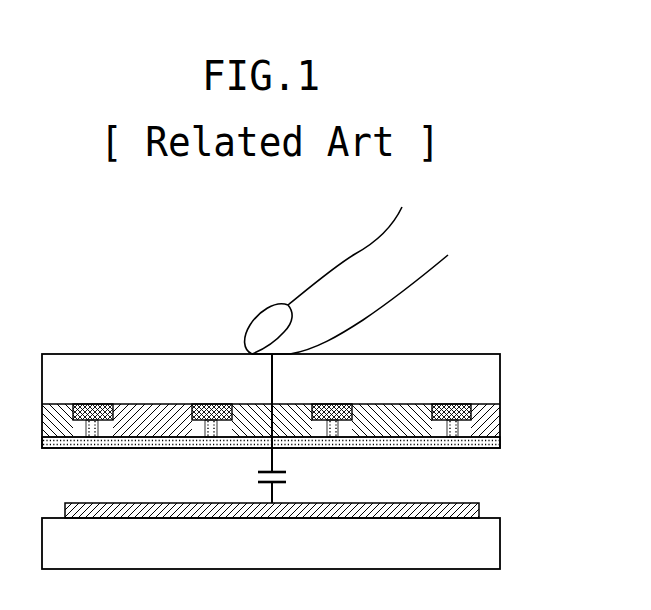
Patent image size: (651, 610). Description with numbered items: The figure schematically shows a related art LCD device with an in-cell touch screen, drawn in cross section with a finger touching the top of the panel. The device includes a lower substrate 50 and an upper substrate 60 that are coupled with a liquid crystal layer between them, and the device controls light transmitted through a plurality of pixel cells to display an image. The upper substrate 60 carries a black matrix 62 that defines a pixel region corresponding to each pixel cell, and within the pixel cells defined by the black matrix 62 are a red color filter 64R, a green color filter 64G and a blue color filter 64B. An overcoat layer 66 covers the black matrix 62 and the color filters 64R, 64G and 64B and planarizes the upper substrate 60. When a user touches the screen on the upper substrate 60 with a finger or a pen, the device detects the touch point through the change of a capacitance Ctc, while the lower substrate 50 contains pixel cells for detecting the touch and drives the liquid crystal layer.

The upper substrate 60 is at (495, 379).
The black matrix 62 is at (471, 411).
The red color filter 64R is at (152, 420).
The green color filter 64G is at (272, 420).
The blue color filter 64B is at (392, 420).
The overcoat layer 66 is at (495, 440).
The lower substrate 50 is at (493, 545).
The capacitance Ctc is at (288, 484).